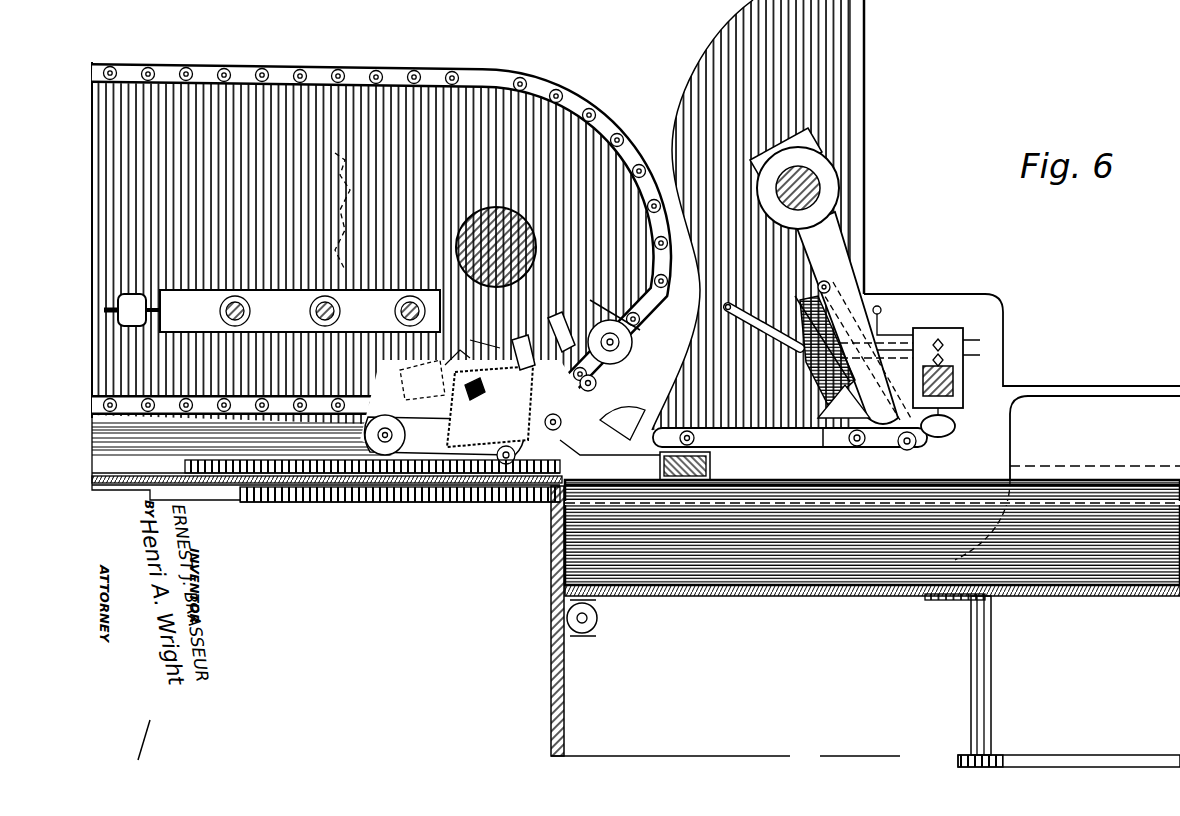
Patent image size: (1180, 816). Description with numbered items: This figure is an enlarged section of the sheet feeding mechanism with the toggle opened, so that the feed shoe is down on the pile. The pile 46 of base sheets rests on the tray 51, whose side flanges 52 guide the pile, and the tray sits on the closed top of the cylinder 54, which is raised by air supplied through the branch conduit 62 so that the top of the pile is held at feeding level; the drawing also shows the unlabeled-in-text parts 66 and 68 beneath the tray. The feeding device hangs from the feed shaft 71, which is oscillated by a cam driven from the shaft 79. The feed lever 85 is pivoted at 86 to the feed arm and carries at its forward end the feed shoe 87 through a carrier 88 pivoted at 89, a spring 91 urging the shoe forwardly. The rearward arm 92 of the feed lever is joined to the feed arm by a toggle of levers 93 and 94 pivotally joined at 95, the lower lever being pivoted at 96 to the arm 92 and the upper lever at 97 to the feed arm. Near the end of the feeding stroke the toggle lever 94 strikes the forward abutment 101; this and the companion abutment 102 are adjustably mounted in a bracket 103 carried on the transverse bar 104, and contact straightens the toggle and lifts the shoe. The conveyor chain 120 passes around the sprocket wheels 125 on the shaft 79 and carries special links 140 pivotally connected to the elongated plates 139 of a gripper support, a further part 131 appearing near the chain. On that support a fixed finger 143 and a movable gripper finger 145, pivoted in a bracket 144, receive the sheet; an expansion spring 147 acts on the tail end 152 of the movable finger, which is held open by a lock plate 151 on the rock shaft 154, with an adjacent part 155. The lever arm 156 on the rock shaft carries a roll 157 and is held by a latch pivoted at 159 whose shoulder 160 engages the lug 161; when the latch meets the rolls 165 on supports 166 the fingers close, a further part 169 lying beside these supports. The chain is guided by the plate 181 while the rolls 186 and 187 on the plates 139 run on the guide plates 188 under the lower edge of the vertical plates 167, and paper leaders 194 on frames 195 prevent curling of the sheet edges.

The pile 46 is at (758, 560).
The tray 51 is at (815, 598).
The side flanges 52 is at (1115, 402).
The cylinder 54 is at (975, 676).
The branch conduit 62 is at (850, 233).
The stop block 66 is at (932, 598).
The roller 68 is at (599, 619).
The feed shaft 71 is at (822, 190).
The shaft 79 is at (512, 226).
The feed lever 85 is at (823, 447).
The pivot 86 is at (858, 447).
The feed shoe 87 is at (660, 467).
The carrier 88 is at (634, 420).
The pivot 89 is at (690, 430).
The spring 91 is at (716, 439).
The arm 92 is at (910, 449).
The toggle lever 93 is at (844, 402).
The toggle lever 94 is at (800, 326).
The pivot 95 is at (818, 366).
The pivot 96 is at (948, 437).
The pivot 97 is at (832, 290).
The abutment 101 is at (758, 326).
The abutment 102 is at (882, 306).
The bracket 103 is at (925, 332).
The bar 104 is at (953, 382).
The chain 120 is at (452, 70).
The sprocket wheels 125 is at (335, 153).
The bracket 131 is at (445, 380).
The elongated plates 139 is at (498, 472).
The special links 140 is at (362, 436).
The fixed finger 143 is at (596, 387).
The bracket 144 is at (488, 470).
The movable gripper finger 145 is at (542, 472).
The expansion spring 147 is at (490, 406).
The lock plate 151 is at (444, 436).
The tail end 152 is at (487, 450).
The rock shaft 154 is at (450, 368).
The link 155 is at (548, 300).
The lever arm 156 is at (568, 325).
The roll 157 is at (655, 332).
The pivot 159 is at (592, 342).
The shoulder 160 is at (516, 336).
The lug 161 is at (472, 340).
The rolls 165 is at (272, 317).
The supports 166 is at (262, 330).
The vertical plates 167 is at (272, 97).
The roller 169 is at (322, 335).
The plate 181 is at (262, 462).
The roll 186 is at (362, 468).
The roll 187 is at (590, 420).
The guide plates 188 is at (432, 470).
The paper leaders 194 is at (600, 458).
The frames 195 is at (995, 469).